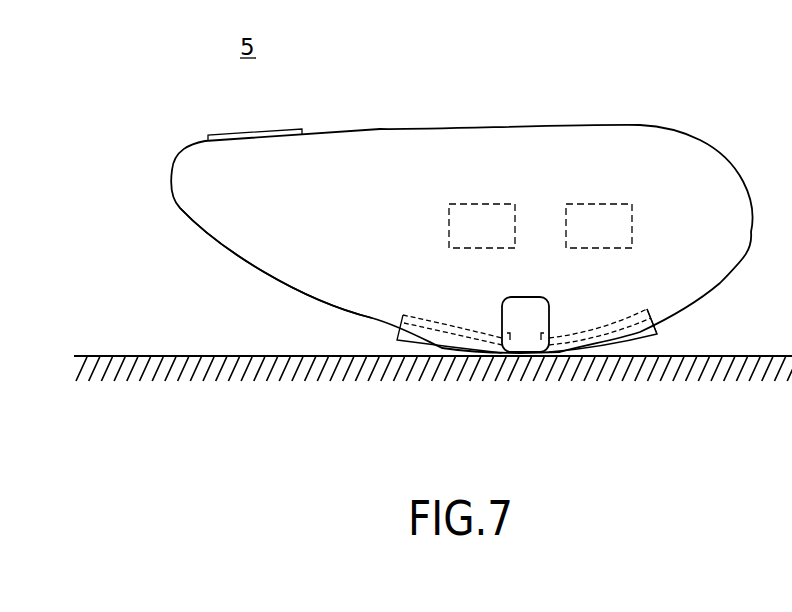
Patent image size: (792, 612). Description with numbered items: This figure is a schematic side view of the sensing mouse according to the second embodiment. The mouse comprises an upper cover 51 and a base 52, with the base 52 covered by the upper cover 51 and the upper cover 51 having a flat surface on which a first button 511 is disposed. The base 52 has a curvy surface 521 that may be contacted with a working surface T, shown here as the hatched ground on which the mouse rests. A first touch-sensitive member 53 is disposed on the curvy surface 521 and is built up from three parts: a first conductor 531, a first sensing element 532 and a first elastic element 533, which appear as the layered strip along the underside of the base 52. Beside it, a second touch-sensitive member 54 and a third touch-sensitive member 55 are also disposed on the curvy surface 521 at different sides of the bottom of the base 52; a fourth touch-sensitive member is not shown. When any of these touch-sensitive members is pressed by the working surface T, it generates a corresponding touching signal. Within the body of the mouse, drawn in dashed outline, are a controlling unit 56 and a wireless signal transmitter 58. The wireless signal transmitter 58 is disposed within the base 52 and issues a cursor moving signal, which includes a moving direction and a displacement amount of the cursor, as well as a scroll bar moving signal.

The upper cover 51 is at (593, 125).
The first button 511 is at (257, 132).
The base 52 is at (691, 157).
The curvy surface 521 is at (263, 268).
The first touch-sensitive member 53 is at (482, 391).
The first conductor 531 is at (410, 333).
The first sensing element 532 is at (527, 369).
The first elastic element 533 is at (398, 326).
The second touch-sensitive member 54 is at (525, 318).
The third touch-sensitive member 55 is at (650, 334).
The controlling unit 56 is at (601, 210).
The wireless signal transmitter 58 is at (483, 210).
The working surface T is at (152, 355).